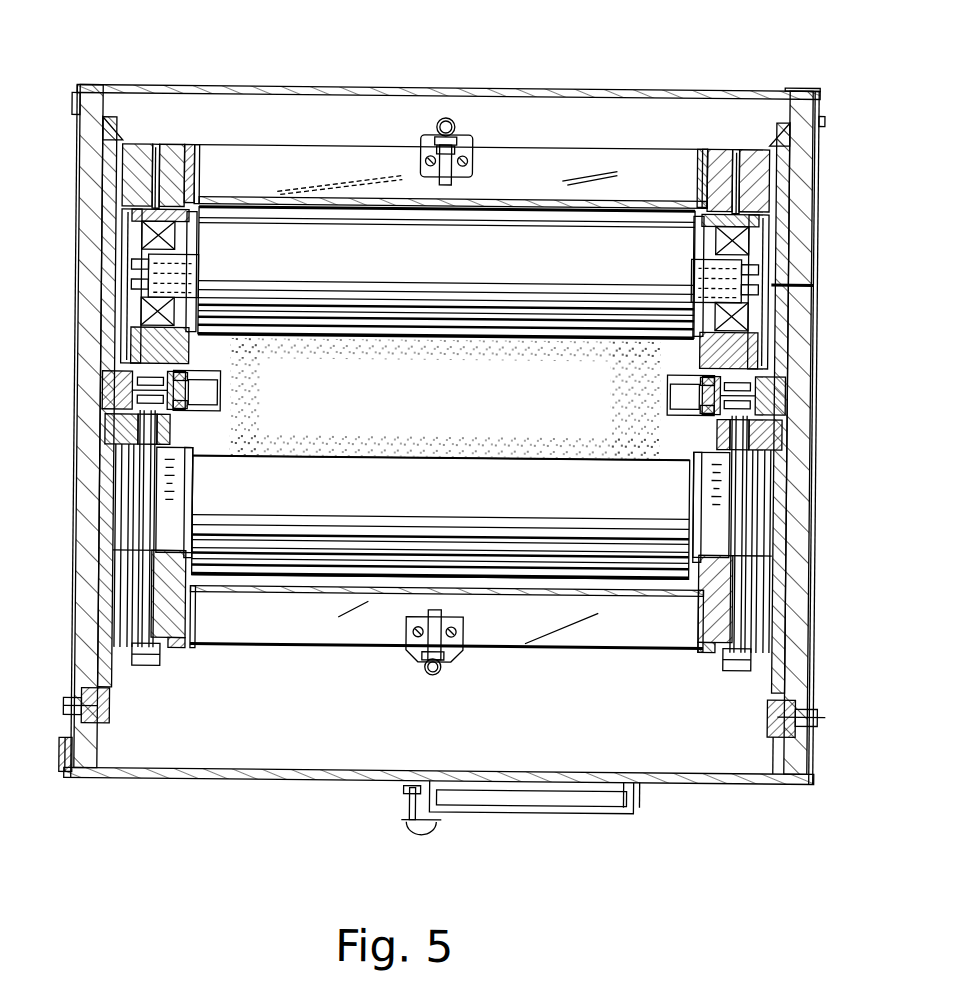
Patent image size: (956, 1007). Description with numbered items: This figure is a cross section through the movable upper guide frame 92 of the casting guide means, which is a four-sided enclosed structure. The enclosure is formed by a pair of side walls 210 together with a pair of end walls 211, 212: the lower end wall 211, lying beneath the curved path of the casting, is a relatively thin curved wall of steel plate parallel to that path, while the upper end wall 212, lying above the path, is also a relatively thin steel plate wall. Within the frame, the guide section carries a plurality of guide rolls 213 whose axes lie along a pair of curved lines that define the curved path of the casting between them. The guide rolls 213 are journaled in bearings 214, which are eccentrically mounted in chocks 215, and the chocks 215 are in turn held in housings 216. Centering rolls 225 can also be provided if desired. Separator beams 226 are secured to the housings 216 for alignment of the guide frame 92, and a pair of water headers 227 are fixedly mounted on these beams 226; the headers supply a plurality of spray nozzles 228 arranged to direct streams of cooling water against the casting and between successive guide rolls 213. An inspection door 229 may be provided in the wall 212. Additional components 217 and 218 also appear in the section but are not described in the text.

The movable upper guide frame 92 is at (421, 78).
The side walls 210 is at (94, 164).
The lower end wall 211 is at (343, 88).
The upper end wall 212 is at (262, 783).
The guide rolls 213 is at (442, 254).
The bearings 214 is at (192, 266).
The chocks 215 is at (186, 234).
The housings 216 is at (172, 158).
The support block 217 is at (170, 434).
The tie rod 218 is at (150, 510).
The centering rolls 225 is at (222, 384).
The separator beams 226 is at (700, 158).
The water headers 227 is at (453, 126).
The spray nozzles 228 is at (452, 178).
The inspection door 229 is at (562, 813).